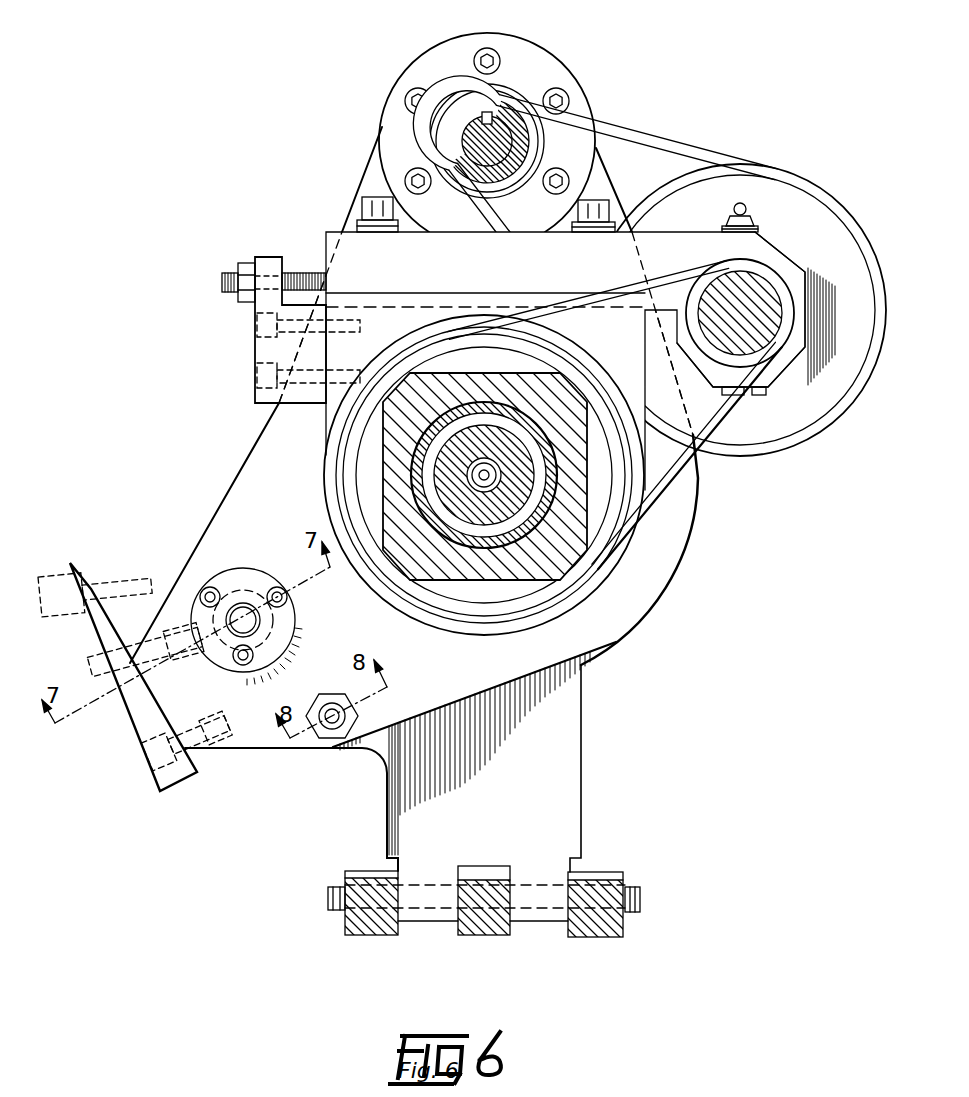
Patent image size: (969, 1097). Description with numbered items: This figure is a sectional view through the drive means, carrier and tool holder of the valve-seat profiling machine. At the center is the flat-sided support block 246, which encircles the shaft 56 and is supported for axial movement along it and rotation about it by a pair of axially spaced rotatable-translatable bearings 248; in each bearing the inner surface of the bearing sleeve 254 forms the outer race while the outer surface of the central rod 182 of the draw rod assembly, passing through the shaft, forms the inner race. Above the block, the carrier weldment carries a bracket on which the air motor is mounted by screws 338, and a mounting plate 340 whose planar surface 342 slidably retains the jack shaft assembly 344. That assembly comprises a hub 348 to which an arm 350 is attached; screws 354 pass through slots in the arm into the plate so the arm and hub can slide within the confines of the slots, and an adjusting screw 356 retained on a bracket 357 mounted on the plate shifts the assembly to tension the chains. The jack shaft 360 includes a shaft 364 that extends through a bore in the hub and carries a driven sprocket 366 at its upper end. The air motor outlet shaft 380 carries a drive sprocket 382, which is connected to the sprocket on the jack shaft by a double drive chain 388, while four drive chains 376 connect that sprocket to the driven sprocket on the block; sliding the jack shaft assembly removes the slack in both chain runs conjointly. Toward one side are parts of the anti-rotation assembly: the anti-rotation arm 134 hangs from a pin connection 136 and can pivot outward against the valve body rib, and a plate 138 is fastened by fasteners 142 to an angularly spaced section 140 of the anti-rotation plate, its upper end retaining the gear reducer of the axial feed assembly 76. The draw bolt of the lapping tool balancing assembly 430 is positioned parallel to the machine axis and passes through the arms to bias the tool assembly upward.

The jack shaft assembly 344 is at (668, 227).
The angularly spaced section 140 is at (247, 720).
The anti-rotation arm 134 is at (577, 922).
The pin connection 136 is at (641, 898).
The lapping tool balancing assembly 430 is at (372, 722).
The plate 138 is at (133, 733).
The fasteners 142 is at (44, 600).
The axial feed assembly 76 is at (298, 627).
The double drive chain 388 is at (840, 215).
The driven sprocket 366 is at (857, 290).
The screws 338 is at (494, 58).
The outlet shaft 380 is at (472, 127).
The drive sprocket 382 is at (530, 160).
The mounting plate 340 is at (383, 313).
The planar surface 342 is at (485, 283).
The hub 348 is at (777, 267).
The jack shaft 360 is at (786, 317).
The shaft 364 is at (705, 298).
The screws 354 is at (362, 205).
The arm 350 is at (710, 232).
The support block 246 is at (573, 415).
The rotatable-translatable bearings 248 is at (410, 498).
The bearing sleeve 254 is at (475, 412).
The shaft 56 is at (485, 520).
The central rod 182 is at (497, 468).
The drive chains 376 is at (650, 503).
The bracket 357 is at (262, 350).
The adjusting screw 356 is at (225, 272).